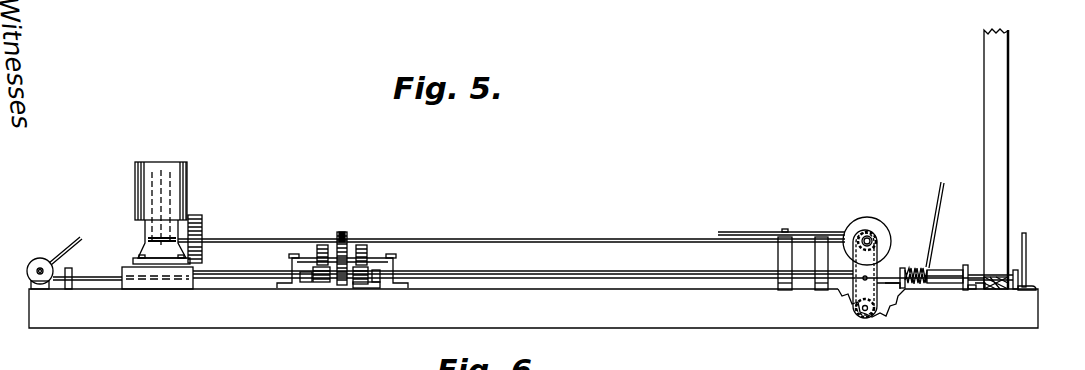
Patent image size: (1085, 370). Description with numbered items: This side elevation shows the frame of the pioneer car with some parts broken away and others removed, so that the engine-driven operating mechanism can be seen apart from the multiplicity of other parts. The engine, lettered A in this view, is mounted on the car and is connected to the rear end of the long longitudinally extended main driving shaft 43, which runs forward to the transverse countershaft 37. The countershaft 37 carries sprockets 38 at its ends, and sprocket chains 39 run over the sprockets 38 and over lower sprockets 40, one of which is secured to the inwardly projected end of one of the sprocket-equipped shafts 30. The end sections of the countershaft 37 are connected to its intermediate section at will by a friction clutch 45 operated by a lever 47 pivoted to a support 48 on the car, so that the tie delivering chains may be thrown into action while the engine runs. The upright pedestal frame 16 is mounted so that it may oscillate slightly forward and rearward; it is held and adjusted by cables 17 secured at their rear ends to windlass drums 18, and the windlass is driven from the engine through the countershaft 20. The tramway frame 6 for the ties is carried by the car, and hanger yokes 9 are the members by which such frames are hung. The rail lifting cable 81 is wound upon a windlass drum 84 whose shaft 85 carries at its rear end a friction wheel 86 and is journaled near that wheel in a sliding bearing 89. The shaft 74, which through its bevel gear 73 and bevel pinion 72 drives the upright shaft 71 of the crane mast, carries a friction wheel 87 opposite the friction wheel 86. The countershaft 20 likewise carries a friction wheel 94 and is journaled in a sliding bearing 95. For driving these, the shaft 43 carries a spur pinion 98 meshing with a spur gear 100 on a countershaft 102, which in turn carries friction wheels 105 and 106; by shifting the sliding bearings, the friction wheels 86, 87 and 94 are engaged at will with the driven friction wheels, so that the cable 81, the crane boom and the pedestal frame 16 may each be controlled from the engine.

The motor A is at (168, 177).
The tramway frame 6 is at (698, 318).
The hanger yoke 9 is at (38, 272).
The pedestal frame 16 is at (995, 93).
The cables 17 is at (66, 246).
The windlass drum 18 is at (36, 258).
The countershaft 20 is at (93, 276).
The sprocket equipped shaft 30 is at (862, 314).
The transverse countershaft 37 is at (871, 232).
The sprocket 38 is at (876, 240).
The sprocket chain 39 is at (855, 285).
The lower sprocket 40 is at (873, 300).
The main driving shaft 43 is at (257, 239).
The friction clutch 45 is at (858, 224).
The lever 47 is at (806, 237).
The support 48 is at (779, 237).
The shaft 71 is at (1030, 250).
The bevel pinion 72 is at (1036, 290).
The bevel gear 73 is at (1030, 278).
The shaft 74 is at (665, 279).
The rail lifting cable 81 is at (935, 229).
The windlass drum 84 is at (950, 268).
The shaft 85 is at (576, 276).
The friction wheel 86 is at (360, 285).
The friction wheel 87 is at (370, 285).
The sliding bearing 89 is at (377, 282).
The friction wheel 94 is at (321, 283).
The sliding bearing 95 is at (305, 282).
The spur pinion 98 is at (347, 235).
The spur gear 100 is at (340, 232).
The countershaft 102 is at (312, 262).
The friction wheel 105 is at (366, 247).
The friction wheel 106 is at (320, 245).